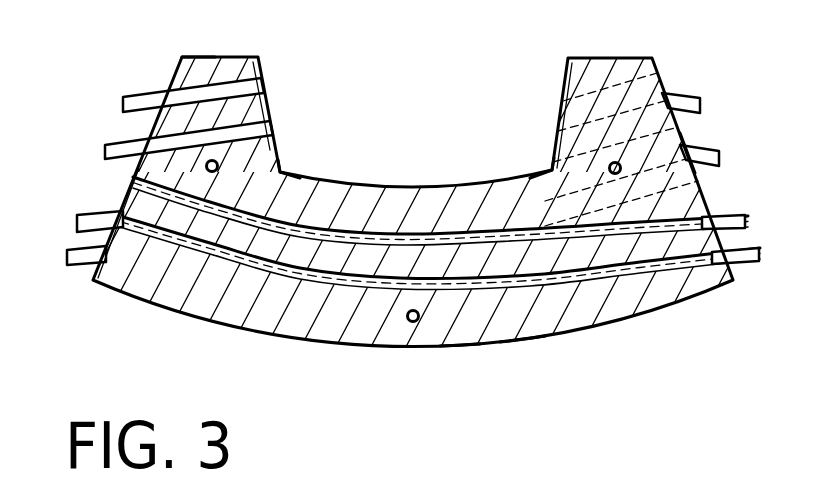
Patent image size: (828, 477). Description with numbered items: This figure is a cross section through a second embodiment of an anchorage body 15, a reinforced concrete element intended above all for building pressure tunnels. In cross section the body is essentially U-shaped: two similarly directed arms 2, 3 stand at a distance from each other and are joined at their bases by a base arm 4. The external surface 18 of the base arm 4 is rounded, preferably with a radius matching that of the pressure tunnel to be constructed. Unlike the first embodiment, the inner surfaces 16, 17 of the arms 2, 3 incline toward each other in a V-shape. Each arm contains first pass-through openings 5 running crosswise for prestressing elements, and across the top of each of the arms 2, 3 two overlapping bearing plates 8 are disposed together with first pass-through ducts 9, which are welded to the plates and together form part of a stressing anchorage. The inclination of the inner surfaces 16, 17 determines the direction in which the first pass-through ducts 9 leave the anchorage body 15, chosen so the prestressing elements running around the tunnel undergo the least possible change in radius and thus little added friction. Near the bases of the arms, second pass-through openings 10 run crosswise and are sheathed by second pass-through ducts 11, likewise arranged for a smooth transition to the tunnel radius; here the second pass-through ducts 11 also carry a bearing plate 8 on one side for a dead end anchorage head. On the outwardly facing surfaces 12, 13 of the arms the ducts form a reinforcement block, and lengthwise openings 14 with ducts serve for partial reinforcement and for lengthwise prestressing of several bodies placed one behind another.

The arm 2 is at (211, 57).
The arm 3 is at (587, 66).
The base arm 4 is at (293, 323).
The first pass-through opening 5 is at (240, 56).
The bearing plate 8 is at (120, 212).
The first pass-through duct 9 is at (140, 96).
The second pass-through opening 10 is at (163, 287).
The second pass-through duct 11 is at (92, 266).
The outwardly facing surface 12 is at (173, 74).
The outwardly facing surface 13 is at (683, 125).
The lengthwise opening 14 is at (212, 171).
The anchorage body 15 is at (522, 352).
The inner surface 16 is at (283, 162).
The inner surface 17 is at (549, 165).
The external surface 18 is at (458, 350).